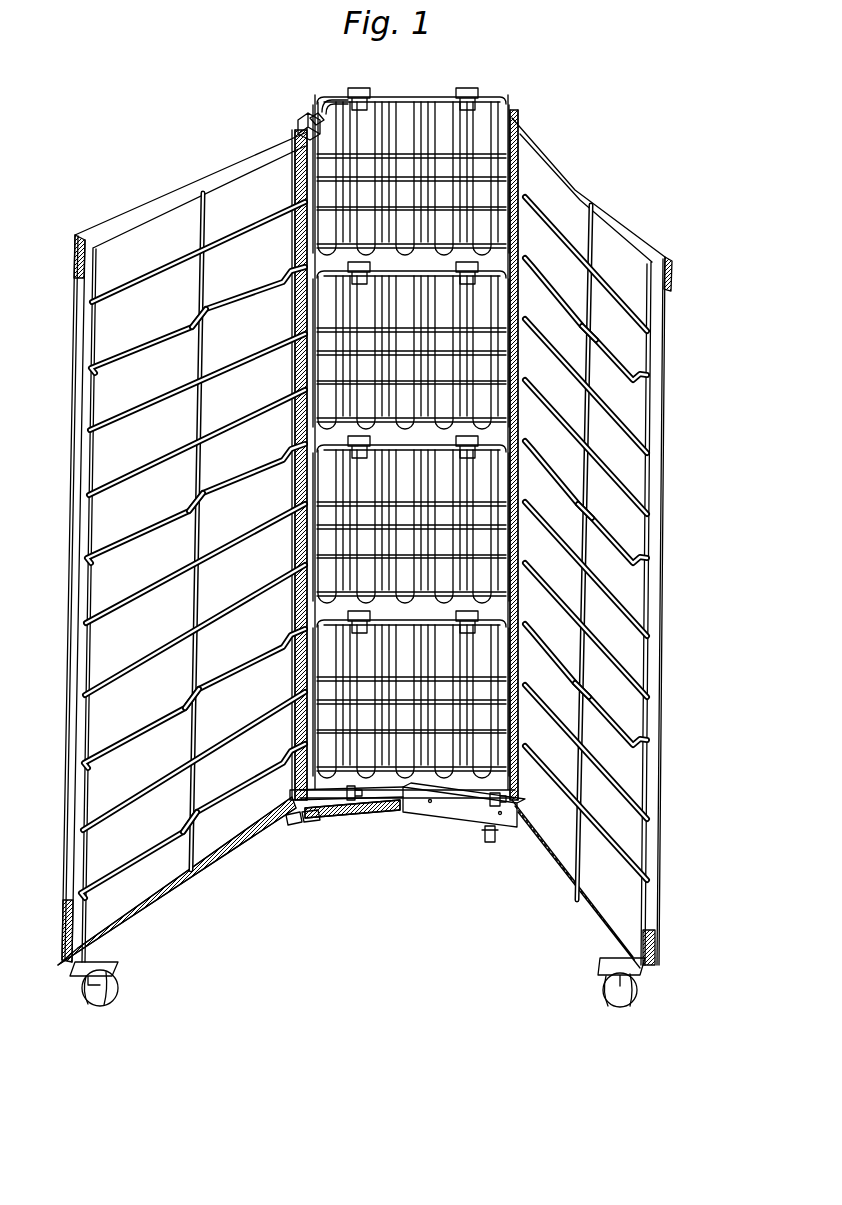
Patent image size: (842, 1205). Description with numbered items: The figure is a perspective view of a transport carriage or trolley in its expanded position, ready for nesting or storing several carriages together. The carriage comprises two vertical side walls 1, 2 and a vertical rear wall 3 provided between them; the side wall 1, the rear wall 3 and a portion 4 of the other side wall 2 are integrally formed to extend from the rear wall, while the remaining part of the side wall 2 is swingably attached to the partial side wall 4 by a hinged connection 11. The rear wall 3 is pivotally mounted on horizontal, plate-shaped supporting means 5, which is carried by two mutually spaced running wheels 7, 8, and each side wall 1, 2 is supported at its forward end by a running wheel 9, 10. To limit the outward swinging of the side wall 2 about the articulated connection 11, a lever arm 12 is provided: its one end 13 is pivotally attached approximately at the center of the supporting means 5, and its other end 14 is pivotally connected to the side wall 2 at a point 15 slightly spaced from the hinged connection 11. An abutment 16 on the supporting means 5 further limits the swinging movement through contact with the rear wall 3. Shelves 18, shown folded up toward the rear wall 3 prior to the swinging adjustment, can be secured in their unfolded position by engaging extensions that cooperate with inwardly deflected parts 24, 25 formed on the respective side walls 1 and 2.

The side wall 1 is at (600, 195).
The side wall 2 is at (185, 187).
The rear wall 3 is at (325, 105).
The portion of side wall 4 is at (312, 118).
The supporting means 5 is at (430, 812).
The running wheel 7 is at (351, 801).
The running wheel 8 is at (487, 840).
The running wheel 9 is at (618, 1002).
The running wheel 10 is at (100, 996).
The hinged connection 11 is at (299, 127).
The lever arm 12 is at (360, 815).
The end of lever 13 is at (400, 800).
The end of lever 14 is at (311, 822).
The pivot point 15 is at (294, 822).
The abutment 16 is at (497, 807).
The shelves 18 is at (518, 95).
The inwardly deflected part 24 is at (122, 355).
The inwardly deflected part 25 is at (270, 300).